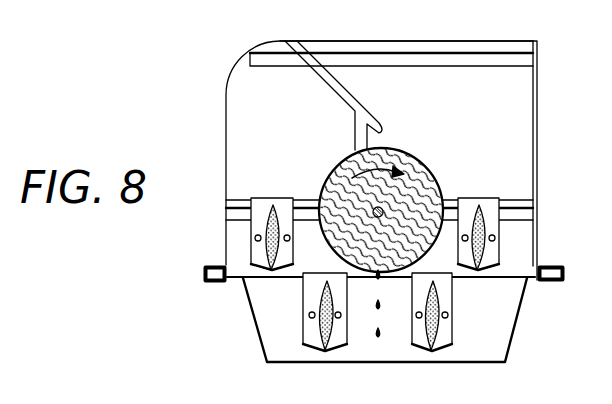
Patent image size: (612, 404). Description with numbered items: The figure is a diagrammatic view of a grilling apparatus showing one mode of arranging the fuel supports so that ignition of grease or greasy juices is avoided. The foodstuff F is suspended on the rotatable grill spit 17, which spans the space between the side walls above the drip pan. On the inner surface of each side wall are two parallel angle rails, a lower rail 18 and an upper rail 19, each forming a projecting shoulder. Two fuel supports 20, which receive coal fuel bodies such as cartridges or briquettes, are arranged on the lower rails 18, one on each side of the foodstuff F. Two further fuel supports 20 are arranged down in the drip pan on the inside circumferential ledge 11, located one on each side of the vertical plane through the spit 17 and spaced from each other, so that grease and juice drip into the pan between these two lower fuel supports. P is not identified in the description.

The ledge 11 is at (512, 277).
The grill spit 17 is at (373, 210).
The lower angle rail 18 is at (513, 200).
The upper angle rail 19 is at (493, 50).
The fuel support 20 is at (500, 238).
The foodstuff F is at (339, 174).
The treating liquid P is at (423, 330).